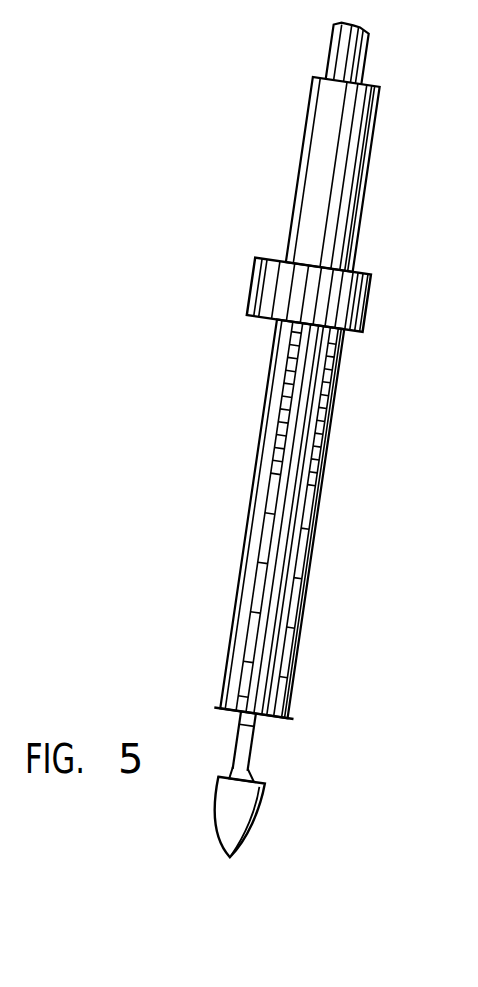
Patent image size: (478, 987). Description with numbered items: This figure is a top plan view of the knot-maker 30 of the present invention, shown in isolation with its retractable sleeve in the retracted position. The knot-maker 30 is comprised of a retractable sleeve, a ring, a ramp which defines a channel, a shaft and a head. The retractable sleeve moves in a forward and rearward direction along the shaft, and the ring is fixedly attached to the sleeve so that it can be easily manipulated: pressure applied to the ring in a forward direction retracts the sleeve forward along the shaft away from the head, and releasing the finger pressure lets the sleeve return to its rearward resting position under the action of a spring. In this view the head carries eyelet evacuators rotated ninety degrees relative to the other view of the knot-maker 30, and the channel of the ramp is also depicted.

The knot-maker 30 is at (224, 526).